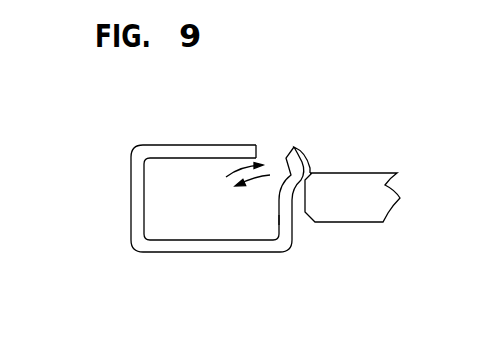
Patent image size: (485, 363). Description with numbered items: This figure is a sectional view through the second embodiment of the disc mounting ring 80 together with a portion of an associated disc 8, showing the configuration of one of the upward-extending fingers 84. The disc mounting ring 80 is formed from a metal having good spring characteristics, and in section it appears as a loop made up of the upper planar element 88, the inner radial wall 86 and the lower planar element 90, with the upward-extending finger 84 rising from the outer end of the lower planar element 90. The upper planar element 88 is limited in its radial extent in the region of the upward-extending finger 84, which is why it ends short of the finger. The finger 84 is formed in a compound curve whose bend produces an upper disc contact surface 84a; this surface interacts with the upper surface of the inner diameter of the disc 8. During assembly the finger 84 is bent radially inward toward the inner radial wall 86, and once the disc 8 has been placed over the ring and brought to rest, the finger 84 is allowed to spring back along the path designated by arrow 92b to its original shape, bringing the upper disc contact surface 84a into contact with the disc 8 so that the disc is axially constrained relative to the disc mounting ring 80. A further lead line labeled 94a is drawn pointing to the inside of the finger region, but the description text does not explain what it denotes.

The disc mounting ring 80 is at (117, 135).
The upper planar element 88 is at (210, 150).
The inner radial wall 86 is at (138, 200).
The lower planar element 90 is at (182, 245).
The upward-extending finger 84 is at (292, 215).
The upper disc contact surface 84a is at (305, 198).
The arrow 92b is at (240, 166).
The inner surface 94a is at (257, 178).
The disc 8 is at (358, 185).